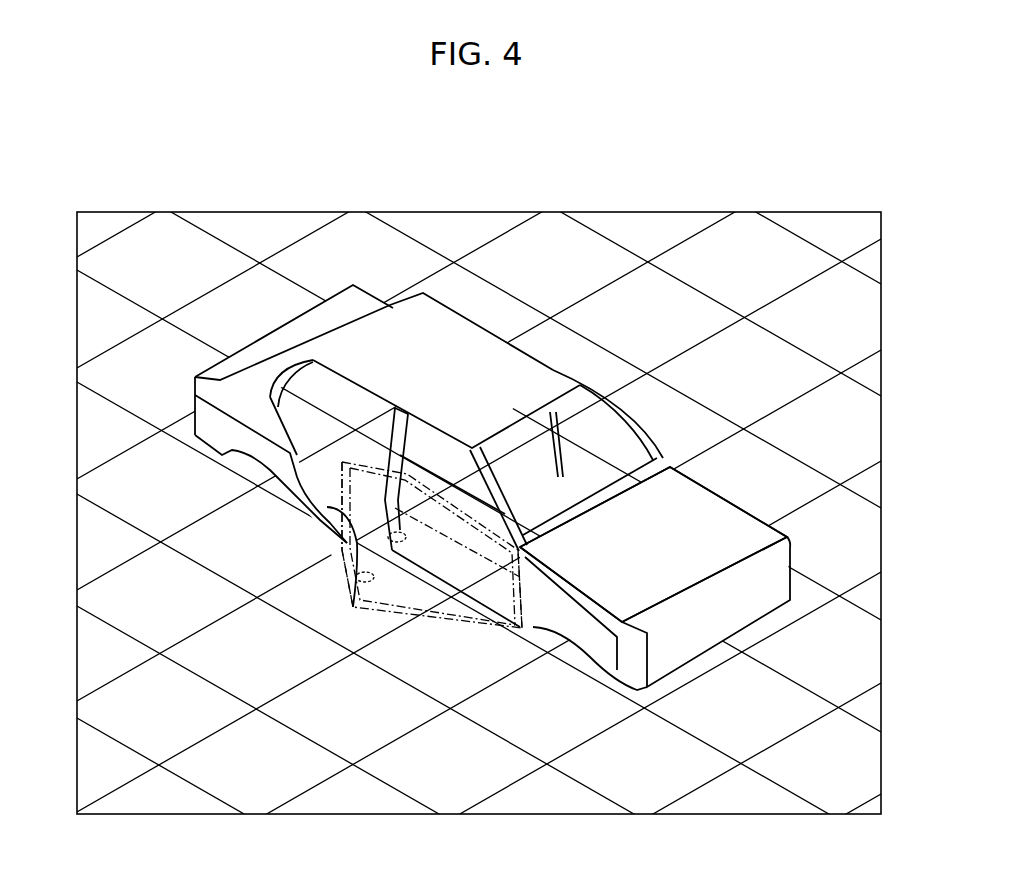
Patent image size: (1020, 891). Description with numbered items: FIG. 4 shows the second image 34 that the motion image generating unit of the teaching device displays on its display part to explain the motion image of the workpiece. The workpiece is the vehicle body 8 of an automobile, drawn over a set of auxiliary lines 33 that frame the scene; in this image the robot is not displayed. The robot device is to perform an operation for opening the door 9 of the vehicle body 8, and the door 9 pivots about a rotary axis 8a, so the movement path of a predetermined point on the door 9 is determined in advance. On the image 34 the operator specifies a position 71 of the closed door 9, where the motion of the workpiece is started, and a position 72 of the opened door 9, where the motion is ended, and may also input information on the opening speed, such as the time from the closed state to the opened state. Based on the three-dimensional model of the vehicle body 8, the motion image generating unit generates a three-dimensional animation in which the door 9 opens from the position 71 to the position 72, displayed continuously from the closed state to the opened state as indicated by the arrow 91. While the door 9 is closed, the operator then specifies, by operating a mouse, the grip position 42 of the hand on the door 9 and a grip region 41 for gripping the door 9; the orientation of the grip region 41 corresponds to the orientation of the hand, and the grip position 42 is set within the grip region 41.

The auxiliary lines 33 is at (215, 237).
The image of the vehicle body 34 is at (673, 211).
The grip region 41 is at (403, 538).
The grip position 42 is at (396, 532).
The position of the closed door 71 is at (408, 422).
The position of the opened door 72 is at (343, 565).
The arrow 91 is at (340, 511).
The door 9 is at (445, 590).
The rotary axis 8a is at (518, 640).
The vehicle body 8 is at (710, 613).